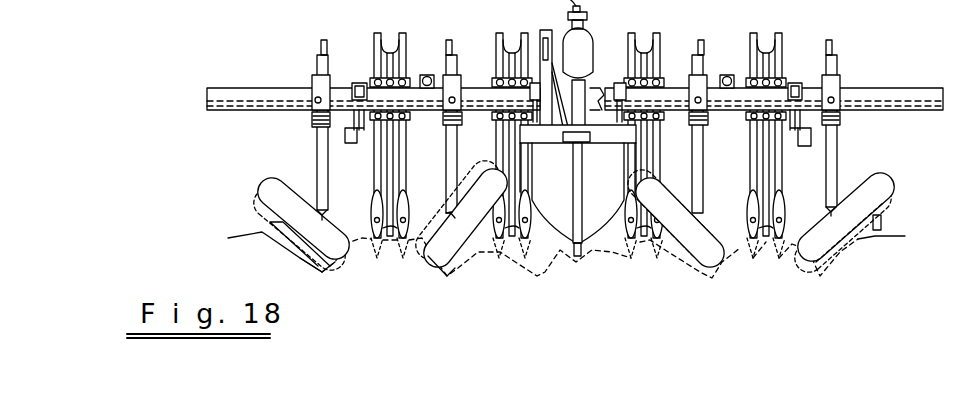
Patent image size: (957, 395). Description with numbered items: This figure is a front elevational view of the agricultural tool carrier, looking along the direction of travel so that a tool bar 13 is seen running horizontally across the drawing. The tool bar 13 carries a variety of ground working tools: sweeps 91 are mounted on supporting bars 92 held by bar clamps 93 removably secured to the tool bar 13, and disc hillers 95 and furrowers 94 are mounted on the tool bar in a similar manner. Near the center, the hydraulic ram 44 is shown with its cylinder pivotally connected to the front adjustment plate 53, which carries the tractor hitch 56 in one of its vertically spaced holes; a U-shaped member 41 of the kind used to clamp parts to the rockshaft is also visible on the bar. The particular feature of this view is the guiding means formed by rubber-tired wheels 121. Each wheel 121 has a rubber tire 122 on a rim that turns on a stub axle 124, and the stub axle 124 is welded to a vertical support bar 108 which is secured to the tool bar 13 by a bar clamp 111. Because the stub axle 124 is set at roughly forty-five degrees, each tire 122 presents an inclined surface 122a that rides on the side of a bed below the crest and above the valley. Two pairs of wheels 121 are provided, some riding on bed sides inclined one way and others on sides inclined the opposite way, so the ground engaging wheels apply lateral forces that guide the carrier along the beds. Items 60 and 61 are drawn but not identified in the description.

The tool bar 13 is at (912, 96).
The U-shaped member 41 is at (427, 76).
The hydraulic ram 44 is at (578, 63).
The front adjustment plate 53 is at (583, 170).
The tractor hitch 56 is at (575, 141).
The bracket 60 is at (538, 85).
The upright plate 61 is at (545, 45).
The sweep 91 is at (387, 250).
The supporting bar 92 is at (393, 37).
The bar clamp 93 is at (495, 83).
The furrower 94 is at (352, 235).
The disc hiller 95 is at (370, 208).
The support bar 108 is at (316, 148).
The bar clamp 111 is at (316, 90).
The rubber-tired wheel 121 is at (854, 172).
The rubber tire 122 is at (278, 200).
The inclined surface 122a is at (345, 260).
The stub axle 124 is at (325, 210).